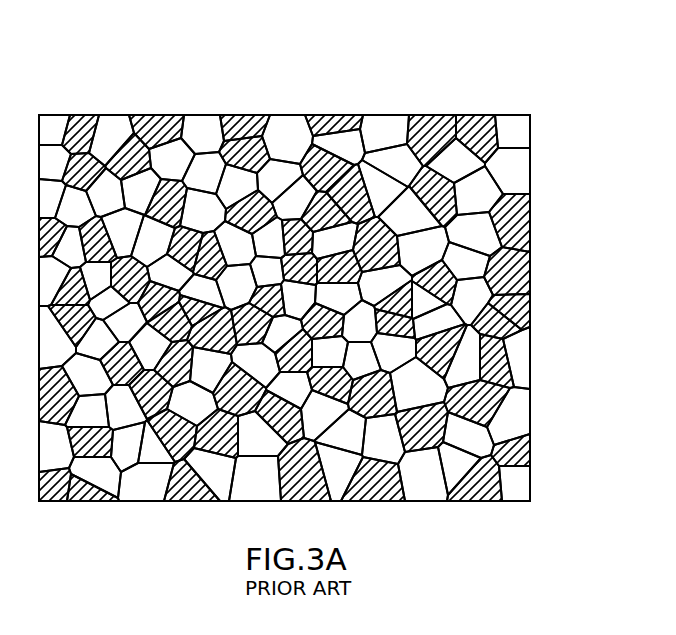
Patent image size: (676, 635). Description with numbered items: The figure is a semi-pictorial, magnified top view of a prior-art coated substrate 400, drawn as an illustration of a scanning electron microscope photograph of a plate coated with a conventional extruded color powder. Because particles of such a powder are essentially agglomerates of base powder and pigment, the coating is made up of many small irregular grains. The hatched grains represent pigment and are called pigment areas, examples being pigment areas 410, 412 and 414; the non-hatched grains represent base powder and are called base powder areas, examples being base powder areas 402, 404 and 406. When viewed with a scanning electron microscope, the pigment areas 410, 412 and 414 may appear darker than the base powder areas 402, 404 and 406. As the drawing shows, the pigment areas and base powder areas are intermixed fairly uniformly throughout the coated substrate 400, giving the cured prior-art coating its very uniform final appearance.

The coated substrate 400 is at (456, 74).
The base powder area 402 is at (478, 192).
The base powder area 404 is at (140, 447).
The base powder area 406 is at (272, 178).
The pigment area 410 is at (105, 130).
The pigment area 412 is at (408, 458).
The pigment area 414 is at (466, 320).